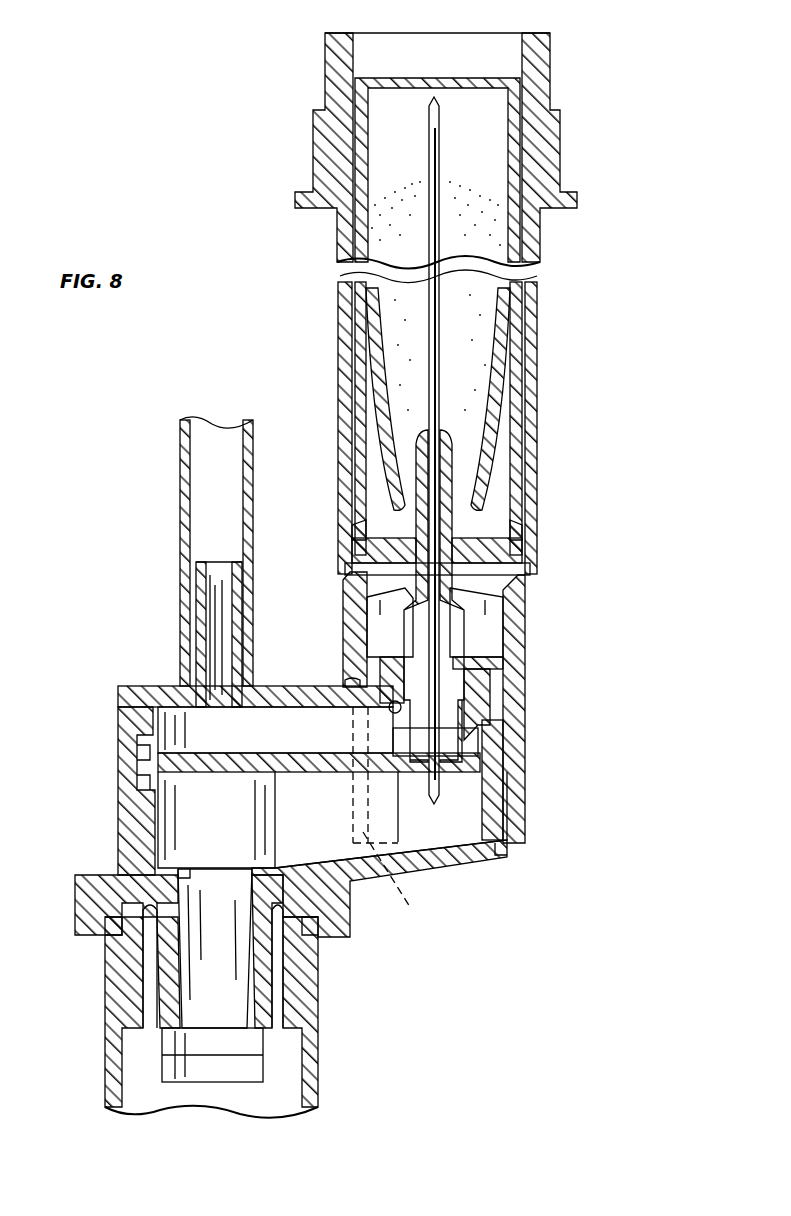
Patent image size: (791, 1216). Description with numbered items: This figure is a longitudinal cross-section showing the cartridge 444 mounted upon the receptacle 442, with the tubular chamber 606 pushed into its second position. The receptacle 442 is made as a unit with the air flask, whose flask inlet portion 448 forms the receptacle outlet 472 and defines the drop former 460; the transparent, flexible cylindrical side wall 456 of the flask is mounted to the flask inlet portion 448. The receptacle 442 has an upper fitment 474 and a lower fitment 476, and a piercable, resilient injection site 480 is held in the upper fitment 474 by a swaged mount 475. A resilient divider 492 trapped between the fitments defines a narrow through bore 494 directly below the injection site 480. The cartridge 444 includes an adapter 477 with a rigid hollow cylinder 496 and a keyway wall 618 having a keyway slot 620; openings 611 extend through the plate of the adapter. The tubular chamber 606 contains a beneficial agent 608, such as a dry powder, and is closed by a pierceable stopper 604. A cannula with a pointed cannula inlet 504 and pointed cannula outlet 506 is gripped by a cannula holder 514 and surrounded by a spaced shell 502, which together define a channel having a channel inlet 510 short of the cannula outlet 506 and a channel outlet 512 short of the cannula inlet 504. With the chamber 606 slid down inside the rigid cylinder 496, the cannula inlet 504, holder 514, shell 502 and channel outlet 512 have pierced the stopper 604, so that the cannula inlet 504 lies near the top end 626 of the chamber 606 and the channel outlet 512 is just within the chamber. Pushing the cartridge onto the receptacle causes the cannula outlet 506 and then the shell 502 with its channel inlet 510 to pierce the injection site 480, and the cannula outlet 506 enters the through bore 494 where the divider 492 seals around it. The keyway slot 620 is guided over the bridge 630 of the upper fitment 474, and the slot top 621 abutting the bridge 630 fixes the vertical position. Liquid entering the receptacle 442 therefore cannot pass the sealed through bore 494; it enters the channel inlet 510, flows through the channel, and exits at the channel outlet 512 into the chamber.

The receptacle 442 is at (110, 757).
The cartridge 444 is at (562, 372).
The flask inlet portion 448 is at (340, 920).
The cylindrical side wall 456 is at (108, 1028).
The drop former 460 is at (258, 1060).
The receptacle outlet 472 is at (190, 872).
The upper fitment 474 is at (146, 690).
The mount 475 is at (490, 686).
The lower fitment 476 is at (460, 872).
The adapter 477 is at (540, 606).
The injection site 480 is at (490, 668).
The resilient divider 492 is at (212, 758).
The through bore 494 is at (505, 820).
The rigid hollow cylinder 496 is at (522, 303).
The shell 502 is at (412, 640).
The cannula inlet 504 is at (440, 108).
The cannula outlet 506 is at (420, 784).
The channel inlet 510 is at (418, 748).
The channel outlet 512 is at (486, 524).
The cannula holder 514 is at (448, 448).
The pierceable stopper 604 is at (352, 562).
The tubular chamber 606 is at (516, 168).
The beneficial agent 608 is at (488, 195).
The openings 611 is at (400, 608).
The keyway wall 618 is at (508, 828).
The keyway slot 620 is at (403, 815).
The slot top 621 is at (352, 688).
The top end 626 is at (476, 80).
The bridge 630 is at (330, 690).